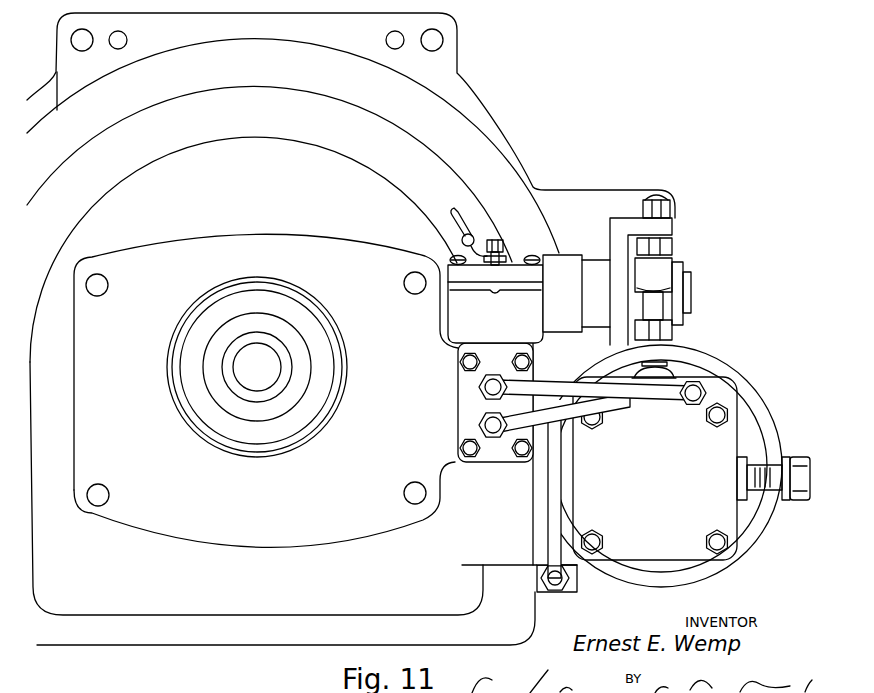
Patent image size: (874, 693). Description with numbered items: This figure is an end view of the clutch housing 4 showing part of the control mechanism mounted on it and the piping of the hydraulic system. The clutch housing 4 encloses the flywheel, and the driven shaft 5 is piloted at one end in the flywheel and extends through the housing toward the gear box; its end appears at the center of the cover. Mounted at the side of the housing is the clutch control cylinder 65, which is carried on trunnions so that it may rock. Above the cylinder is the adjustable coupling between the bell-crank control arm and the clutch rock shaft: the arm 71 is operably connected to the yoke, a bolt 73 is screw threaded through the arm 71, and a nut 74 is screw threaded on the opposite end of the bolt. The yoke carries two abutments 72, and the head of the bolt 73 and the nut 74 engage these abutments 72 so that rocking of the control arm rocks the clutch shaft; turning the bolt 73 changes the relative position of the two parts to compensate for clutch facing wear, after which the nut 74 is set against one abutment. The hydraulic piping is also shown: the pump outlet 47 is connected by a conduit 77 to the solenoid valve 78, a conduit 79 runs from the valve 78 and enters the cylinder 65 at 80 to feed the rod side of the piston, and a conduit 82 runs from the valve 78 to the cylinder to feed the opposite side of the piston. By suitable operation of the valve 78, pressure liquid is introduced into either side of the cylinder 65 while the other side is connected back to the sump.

The clutch housing 4 is at (482, 165).
The driven shaft 5 is at (256, 382).
The pump outlet 47 is at (568, 590).
The clutch control cylinder 65 is at (732, 427).
The arm 71 is at (662, 272).
The abutments 72 is at (662, 227).
The bolt 73 is at (673, 242).
The nut 74 is at (655, 332).
The conduit 77 is at (578, 567).
The solenoid valve 78 is at (453, 322).
The conduit 79 is at (546, 387).
The cylinder entry point 80 is at (700, 390).
The conduit 82 is at (517, 427).